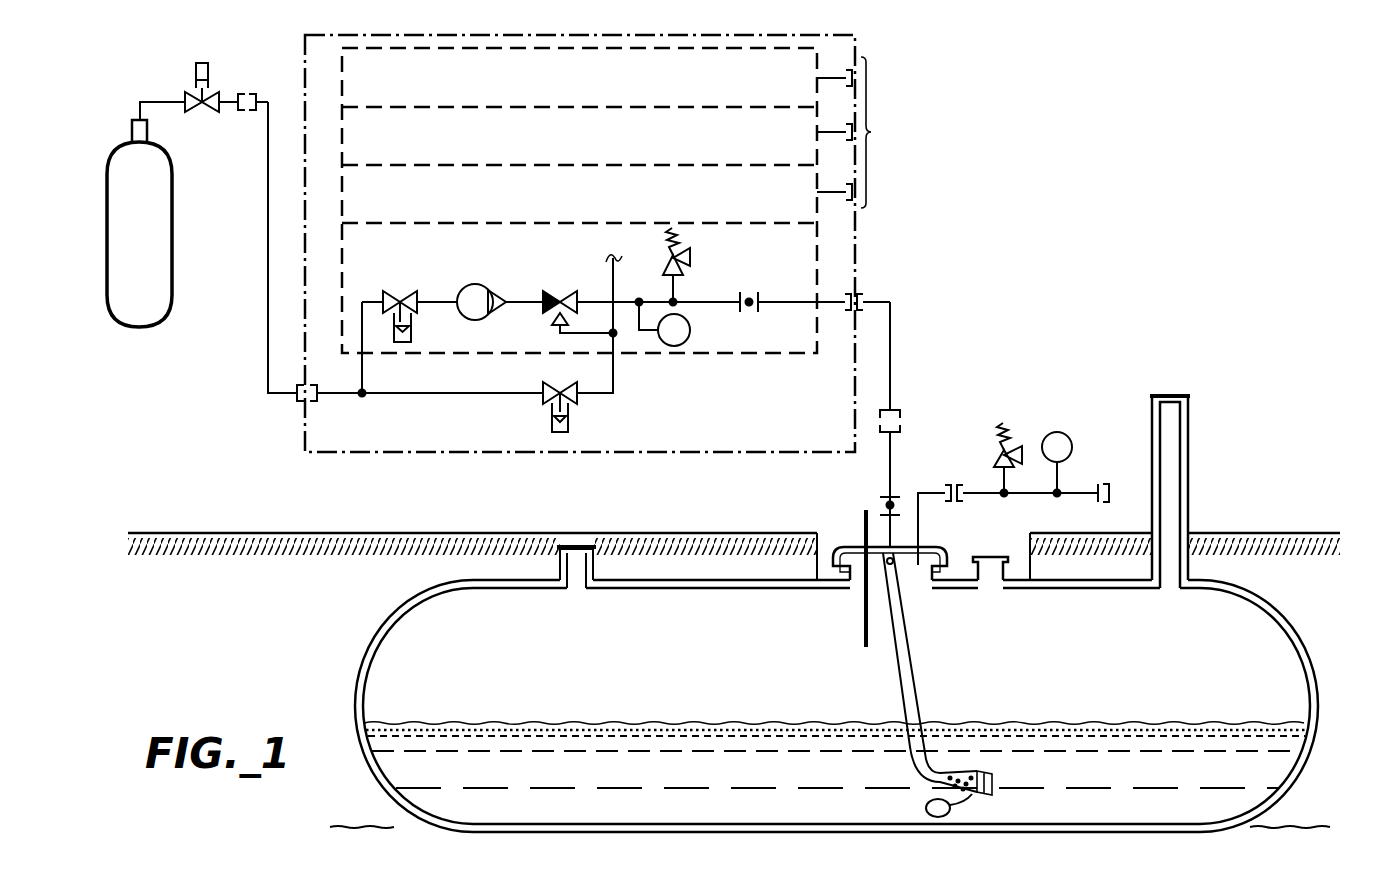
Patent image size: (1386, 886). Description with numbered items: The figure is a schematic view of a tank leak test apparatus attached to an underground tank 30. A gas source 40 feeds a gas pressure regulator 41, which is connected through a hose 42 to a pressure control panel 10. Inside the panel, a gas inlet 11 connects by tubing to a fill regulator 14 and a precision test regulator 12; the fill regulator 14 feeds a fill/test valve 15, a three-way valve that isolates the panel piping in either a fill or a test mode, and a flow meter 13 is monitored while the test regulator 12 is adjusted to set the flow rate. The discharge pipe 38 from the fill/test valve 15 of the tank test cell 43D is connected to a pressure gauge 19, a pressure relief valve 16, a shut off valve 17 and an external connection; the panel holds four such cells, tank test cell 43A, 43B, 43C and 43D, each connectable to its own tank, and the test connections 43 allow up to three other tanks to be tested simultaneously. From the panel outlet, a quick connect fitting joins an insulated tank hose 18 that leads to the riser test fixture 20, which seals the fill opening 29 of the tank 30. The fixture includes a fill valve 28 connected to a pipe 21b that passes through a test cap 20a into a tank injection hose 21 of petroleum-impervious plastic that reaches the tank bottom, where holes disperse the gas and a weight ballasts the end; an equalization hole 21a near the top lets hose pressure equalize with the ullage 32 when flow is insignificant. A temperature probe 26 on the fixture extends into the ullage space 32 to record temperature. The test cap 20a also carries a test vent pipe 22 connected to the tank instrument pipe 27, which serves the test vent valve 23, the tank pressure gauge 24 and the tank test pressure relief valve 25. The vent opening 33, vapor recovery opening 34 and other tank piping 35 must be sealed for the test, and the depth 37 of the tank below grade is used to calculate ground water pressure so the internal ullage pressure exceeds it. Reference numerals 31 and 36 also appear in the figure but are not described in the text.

The pressure control panel 10 is at (866, 241).
The gas inlet 11 is at (300, 405).
The precision test regulator 12 is at (395, 292).
The flow meter 13 is at (480, 284).
The fill regulator 14 is at (554, 382).
The fill/test valve 15 is at (554, 292).
The pressure relief valve 16 is at (690, 256).
The shut off valve 17 is at (752, 296).
The insulated tank hose 18 is at (892, 360).
The pressure gauge 19 is at (682, 333).
The riser test fixture 20 is at (858, 705).
The test cap 20a is at (862, 540).
The tank injection hose 21 is at (914, 676).
The equalization hole 21a is at (894, 575).
The pipe 21b is at (888, 485).
The test vent pipe 22 is at (920, 540).
The test vent valve 23 is at (1099, 484).
The tank pressure gauge 24 is at (1053, 432).
The tank test pressure relief valve 25 is at (1000, 465).
The temperature probe 26 is at (863, 632).
The tank instrument pipe 27 is at (1078, 490).
The fill valve 28 is at (894, 503).
The fill opening 29 is at (897, 573).
The underground tank 30 is at (1240, 588).
The liquid level 31 is at (544, 770).
The ullage 32 is at (489, 681).
The vent opening 33 is at (1168, 396).
The vapor recovery opening 34 is at (1000, 557).
The tank piping 35 is at (560, 582).
The ground surface 36 is at (430, 533).
The depth 37 is at (1285, 826).
The discharge pipe 38 is at (692, 298).
The gas source 40 is at (172, 195).
The gas pressure regulator 41 is at (210, 95).
The hose 42 is at (268, 295).
The test connections 43 is at (872, 124).
The tank test cell 43A is at (600, 84).
The tank test cell 43B is at (600, 143).
The tank test cell 43C is at (600, 203).
The tank test cell 43D is at (398, 257).